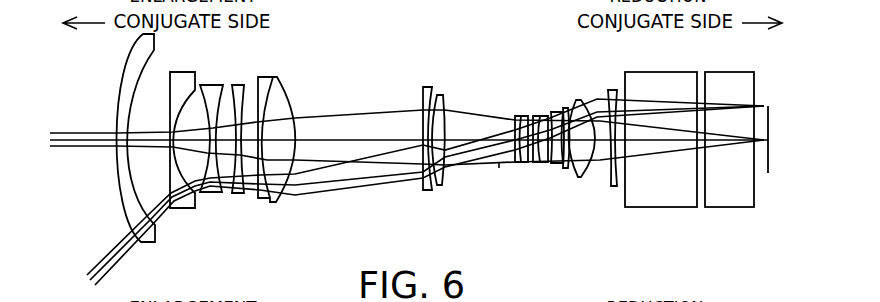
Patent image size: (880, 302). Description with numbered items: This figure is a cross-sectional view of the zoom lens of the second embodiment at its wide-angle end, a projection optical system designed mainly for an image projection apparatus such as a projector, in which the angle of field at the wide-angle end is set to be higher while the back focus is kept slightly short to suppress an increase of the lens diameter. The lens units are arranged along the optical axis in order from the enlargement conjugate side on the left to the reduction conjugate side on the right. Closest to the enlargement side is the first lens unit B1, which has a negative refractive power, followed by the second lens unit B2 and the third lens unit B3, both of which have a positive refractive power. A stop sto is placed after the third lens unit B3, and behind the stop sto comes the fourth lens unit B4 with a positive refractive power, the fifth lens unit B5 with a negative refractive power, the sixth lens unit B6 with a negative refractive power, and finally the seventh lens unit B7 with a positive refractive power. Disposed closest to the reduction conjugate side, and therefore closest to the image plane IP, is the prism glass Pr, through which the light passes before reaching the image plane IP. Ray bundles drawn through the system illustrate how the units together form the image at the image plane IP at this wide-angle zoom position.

The first lens unit B1 is at (137, 257).
The second lens unit B2 is at (435, 195).
The third lens unit B3 is at (438, 195).
The fourth lens unit B4 is at (530, 195).
The fifth lens unit B5 is at (533, 195).
The sixth lens unit B6 is at (555, 195).
The seventh lens unit B7 is at (604, 195).
The stop sto is at (500, 113).
The prism glass Pr is at (623, 216).
The image plane IP is at (768, 105).